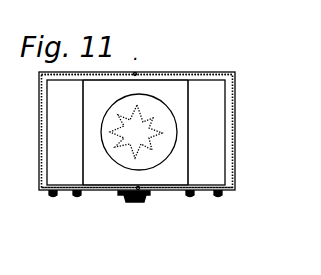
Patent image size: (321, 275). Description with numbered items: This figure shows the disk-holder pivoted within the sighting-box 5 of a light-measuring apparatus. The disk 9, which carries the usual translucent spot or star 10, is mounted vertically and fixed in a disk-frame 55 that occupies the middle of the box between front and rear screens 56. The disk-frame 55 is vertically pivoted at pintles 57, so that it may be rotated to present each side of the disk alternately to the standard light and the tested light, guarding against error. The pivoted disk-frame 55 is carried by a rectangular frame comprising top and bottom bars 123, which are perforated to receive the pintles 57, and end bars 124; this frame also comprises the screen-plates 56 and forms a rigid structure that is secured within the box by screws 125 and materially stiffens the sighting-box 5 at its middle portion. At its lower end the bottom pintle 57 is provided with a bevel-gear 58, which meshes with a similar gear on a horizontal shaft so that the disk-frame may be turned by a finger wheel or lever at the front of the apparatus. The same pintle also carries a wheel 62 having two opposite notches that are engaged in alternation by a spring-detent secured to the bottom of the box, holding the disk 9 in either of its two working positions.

The sighting-box 5 is at (234, 107).
The disk 9 is at (135, 131).
The translucent spot or star 10 is at (147, 120).
The disk-frame 55 is at (185, 155).
The screens 56 is at (134, 132).
The pintles 57 is at (136, 73).
The bevel-gear 58 is at (150, 200).
The wheel 62 is at (122, 193).
The top and bottom bars 123 is at (207, 80).
The end bars 124 is at (235, 172).
The screws 125 is at (55, 197).